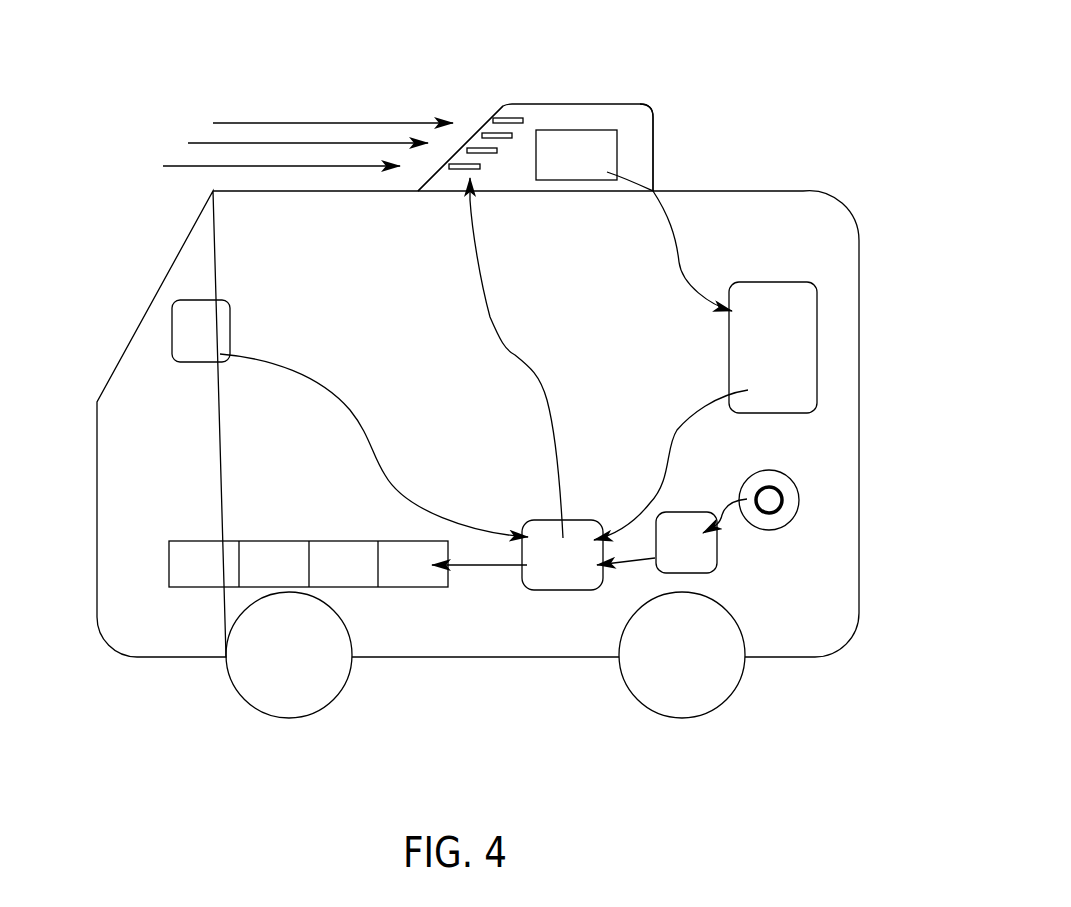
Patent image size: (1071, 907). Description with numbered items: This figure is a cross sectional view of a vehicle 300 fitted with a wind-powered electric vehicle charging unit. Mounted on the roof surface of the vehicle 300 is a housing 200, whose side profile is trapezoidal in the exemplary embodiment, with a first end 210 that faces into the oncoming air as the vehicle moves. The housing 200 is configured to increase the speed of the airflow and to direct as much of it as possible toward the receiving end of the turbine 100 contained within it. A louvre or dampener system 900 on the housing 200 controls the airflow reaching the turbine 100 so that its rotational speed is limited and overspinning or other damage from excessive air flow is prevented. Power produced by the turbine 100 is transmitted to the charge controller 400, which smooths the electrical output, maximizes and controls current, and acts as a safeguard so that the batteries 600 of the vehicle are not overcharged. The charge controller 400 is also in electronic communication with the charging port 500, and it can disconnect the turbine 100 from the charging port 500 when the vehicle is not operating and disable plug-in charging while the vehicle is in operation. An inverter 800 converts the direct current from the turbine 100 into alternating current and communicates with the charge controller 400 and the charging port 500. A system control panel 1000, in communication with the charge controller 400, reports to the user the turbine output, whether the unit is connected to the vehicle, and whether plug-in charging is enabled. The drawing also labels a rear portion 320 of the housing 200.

The turbine 100 is at (562, 145).
The housing 200 is at (583, 113).
The first end 210 is at (425, 182).
The vehicle 300 is at (665, 191).
The rear edge of housing 320 is at (655, 117).
The charge controller 400 is at (818, 347).
The charging port 500 is at (800, 500).
The batteries 600 is at (168, 587).
The inverter 800 is at (717, 558).
The louvre or dampener system 900 is at (490, 113).
The system control panel 1000 is at (173, 307).